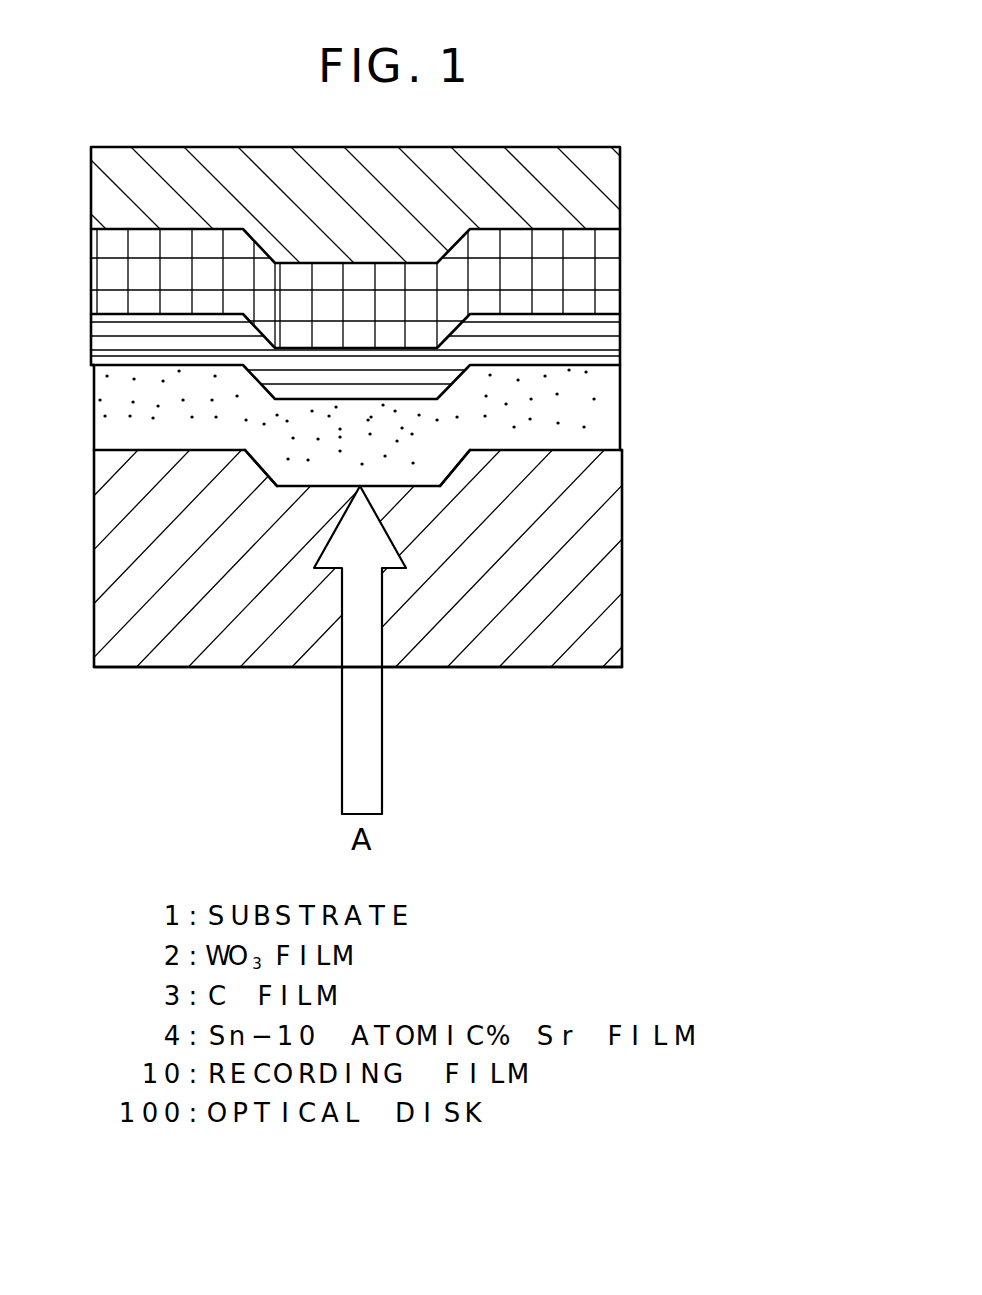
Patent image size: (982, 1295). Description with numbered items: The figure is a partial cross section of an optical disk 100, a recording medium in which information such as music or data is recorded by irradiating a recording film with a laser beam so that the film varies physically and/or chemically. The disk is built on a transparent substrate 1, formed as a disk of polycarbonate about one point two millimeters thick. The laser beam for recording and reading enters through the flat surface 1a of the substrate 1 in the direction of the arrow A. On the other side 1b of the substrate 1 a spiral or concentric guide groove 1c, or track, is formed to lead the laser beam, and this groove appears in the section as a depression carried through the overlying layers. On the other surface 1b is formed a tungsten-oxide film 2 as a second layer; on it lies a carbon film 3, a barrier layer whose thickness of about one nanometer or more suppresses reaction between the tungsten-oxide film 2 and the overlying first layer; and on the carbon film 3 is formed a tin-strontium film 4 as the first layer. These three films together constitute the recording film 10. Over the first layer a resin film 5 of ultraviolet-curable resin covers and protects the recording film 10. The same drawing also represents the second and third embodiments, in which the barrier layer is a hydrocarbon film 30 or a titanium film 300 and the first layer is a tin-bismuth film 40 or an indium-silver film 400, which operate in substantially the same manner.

The transparent substrate 1 is at (410, 603).
The surface 1a is at (512, 667).
The other side 1b is at (565, 450).
The guide groove 1c is at (262, 462).
The WO3 film 2 is at (590, 406).
The C film 3 is at (445, 359).
The hydrocarbon film 30 is at (445, 359).
The Ti film 300 is at (590, 345).
The Sn-10 atomic % Sr film 4 is at (448, 288).
The Sn-43 atomic % Bi film 40 is at (448, 288).
The In-3.2 atomic % Ag film 400 is at (585, 272).
The resin film 5 is at (585, 188).
The recording film 10 is at (489, 355).
The optical disk 100 is at (638, 228).